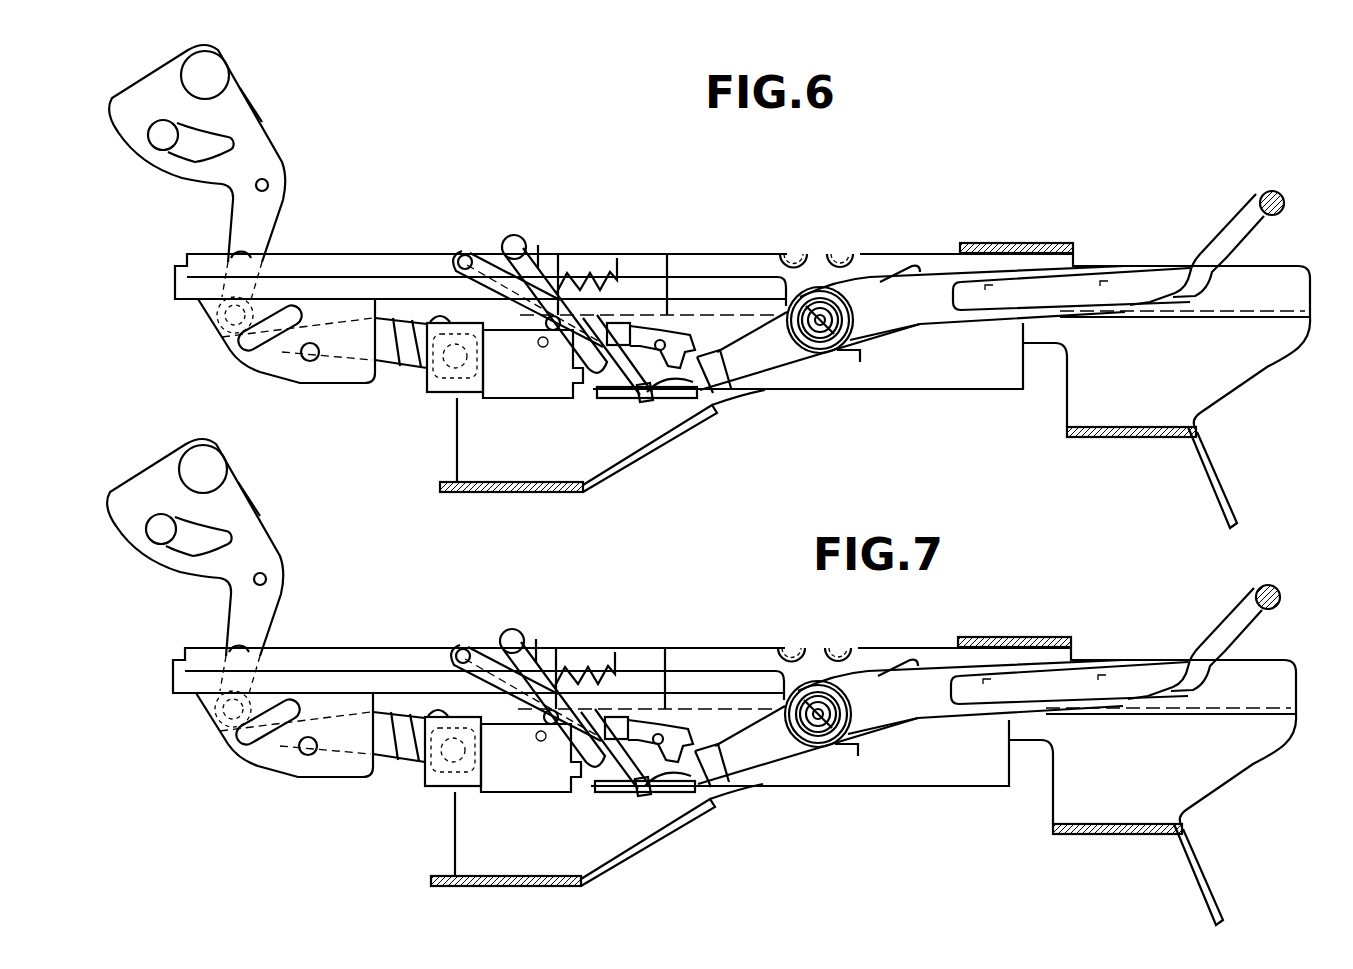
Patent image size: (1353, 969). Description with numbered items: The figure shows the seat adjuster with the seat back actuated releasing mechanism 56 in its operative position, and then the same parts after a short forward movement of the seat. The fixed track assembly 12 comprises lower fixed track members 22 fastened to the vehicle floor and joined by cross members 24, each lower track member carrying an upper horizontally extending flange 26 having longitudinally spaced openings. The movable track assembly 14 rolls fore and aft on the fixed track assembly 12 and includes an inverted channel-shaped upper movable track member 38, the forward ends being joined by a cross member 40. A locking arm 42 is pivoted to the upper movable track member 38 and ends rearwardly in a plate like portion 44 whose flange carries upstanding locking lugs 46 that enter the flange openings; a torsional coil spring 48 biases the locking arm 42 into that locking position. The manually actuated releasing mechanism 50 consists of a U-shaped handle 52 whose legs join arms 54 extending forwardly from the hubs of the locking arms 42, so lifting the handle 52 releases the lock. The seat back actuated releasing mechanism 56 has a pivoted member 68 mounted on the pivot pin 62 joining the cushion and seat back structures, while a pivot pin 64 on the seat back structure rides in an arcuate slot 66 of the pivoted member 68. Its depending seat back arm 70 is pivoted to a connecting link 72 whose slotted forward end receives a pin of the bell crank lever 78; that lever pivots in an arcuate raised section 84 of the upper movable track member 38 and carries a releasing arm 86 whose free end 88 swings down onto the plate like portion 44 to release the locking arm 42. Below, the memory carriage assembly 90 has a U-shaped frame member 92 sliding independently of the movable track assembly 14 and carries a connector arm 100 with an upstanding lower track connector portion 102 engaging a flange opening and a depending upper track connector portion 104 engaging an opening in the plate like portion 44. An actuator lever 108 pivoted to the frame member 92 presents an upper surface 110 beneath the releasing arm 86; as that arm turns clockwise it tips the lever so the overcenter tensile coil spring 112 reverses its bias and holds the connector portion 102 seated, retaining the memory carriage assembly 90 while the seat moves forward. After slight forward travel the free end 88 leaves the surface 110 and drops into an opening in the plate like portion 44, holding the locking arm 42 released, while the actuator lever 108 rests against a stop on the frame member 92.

In FIG. 6, the fixed track assembly 12 is at (452, 440).
In FIG. 7, the fixed track assembly 12 is at (734, 746).
In FIG. 6, the movable track assembly 14 is at (1092, 266).
In FIG. 7, the movable track assembly 14 is at (1069, 656).
In FIG. 6, the lower fixed track members 22 is at (598, 470).
In FIG. 7, the lower fixed track members 22 is at (650, 842).
In FIG. 6, the cross members 24 is at (530, 493).
In FIG. 7, the cross members 24 is at (806, 873).
In FIG. 6, the upper horizontally extending flange 26 is at (458, 334).
In FIG. 7, the upper horizontally extending flange 26 is at (425, 675).
In FIG. 6, the upper movable track member 38 is at (912, 268).
In FIG. 7, the upper movable track member 38 is at (960, 665).
In FIG. 6, the cross member 40 is at (988, 243).
In FIG. 7, the cross member 40 is at (1014, 621).
In FIG. 6, the locking arms 42 is at (763, 370).
In FIG. 7, the locking arms 42 is at (808, 761).
In FIG. 6, the plate like portion 44 is at (698, 400).
In FIG. 7, the plate like portion 44 is at (632, 808).
In FIG. 6, the locking teeth or lugs 46 is at (623, 393).
In FIG. 7, the locking teeth or lugs 46 is at (664, 696).
In FIG. 6, the torsional coil spring 48 is at (832, 348).
In FIG. 7, the torsional coil spring 48 is at (835, 729).
In FIG. 6, the manually actuated releasing mechanism 50 is at (1252, 250).
In FIG. 7, the manually actuated releasing mechanism 50 is at (1235, 756).
In FIG. 6, the actuating member or handle 52 is at (1264, 192).
In FIG. 7, the actuating member or handle 52 is at (1246, 582).
In FIG. 6, the arms 54 is at (888, 286).
In FIG. 7, the arms 54 is at (836, 647).
In FIG. 6, the seat back actuated releasing mechanism 56 is at (290, 152).
In FIG. 7, the seat back actuated releasing mechanism 56 is at (234, 583).
In FIG. 6, the pivot pin 62 is at (217, 70).
In FIG. 7, the pivot pin 62 is at (235, 469).
In FIG. 6, the pivot pin 64 is at (165, 140).
In FIG. 7, the pivot pin 64 is at (152, 555).
In FIG. 6, the arcuate slot 66 is at (235, 145).
In FIG. 7, the arcuate slot 66 is at (241, 530).
In FIG. 6, the pivoted member 68 is at (233, 96).
In FIG. 7, the pivoted member 68 is at (266, 494).
In FIG. 6, the seat back arm 70 is at (258, 205).
In FIG. 7, the seat back arm 70 is at (292, 595).
In FIG. 6, the connecting link 72 is at (385, 372).
In FIG. 7, the connecting link 72 is at (322, 752).
In FIG. 6, the bell crank lever 78 is at (538, 244).
In FIG. 7, the bell crank lever 78 is at (537, 625).
In FIG. 6, the arcuate raised section 84 is at (506, 244).
In FIG. 7, the arcuate raised section 84 is at (526, 671).
In FIG. 6, the releasing arm 86 is at (580, 282).
In FIG. 7, the releasing arm 86 is at (554, 694).
In FIG. 6, the free end 88 is at (702, 400).
In FIG. 7, the free end 88 is at (730, 801).
In FIG. 6, the memory carriage assembly 90 is at (490, 420).
In FIG. 7, the memory carriage assembly 90 is at (492, 800).
In FIG. 6, the U-shaped frame member 92 is at (468, 392).
In FIG. 7, the U-shaped frame member 92 is at (434, 768).
In FIG. 6, the connector assembly 100 is at (672, 320).
In FIG. 7, the connector assembly 100 is at (629, 668).
In FIG. 6, the lower track connector portion 102 is at (617, 258).
In FIG. 7, the lower track connector portion 102 is at (600, 674).
In FIG. 6, the upper track connector portion 104 is at (728, 357).
In FIG. 7, the upper track connector portion 104 is at (740, 760).
In FIG. 6, the actuator mechanism 108 is at (522, 326).
In FIG. 7, the actuator mechanism 108 is at (516, 748).
In FIG. 6, the upper surface 110 is at (590, 392).
In FIG. 7, the upper surface 110 is at (605, 801).
In FIG. 6, the overcenter tensile coil spring 112 is at (648, 322).
In FIG. 7, the overcenter tensile coil spring 112 is at (665, 689).